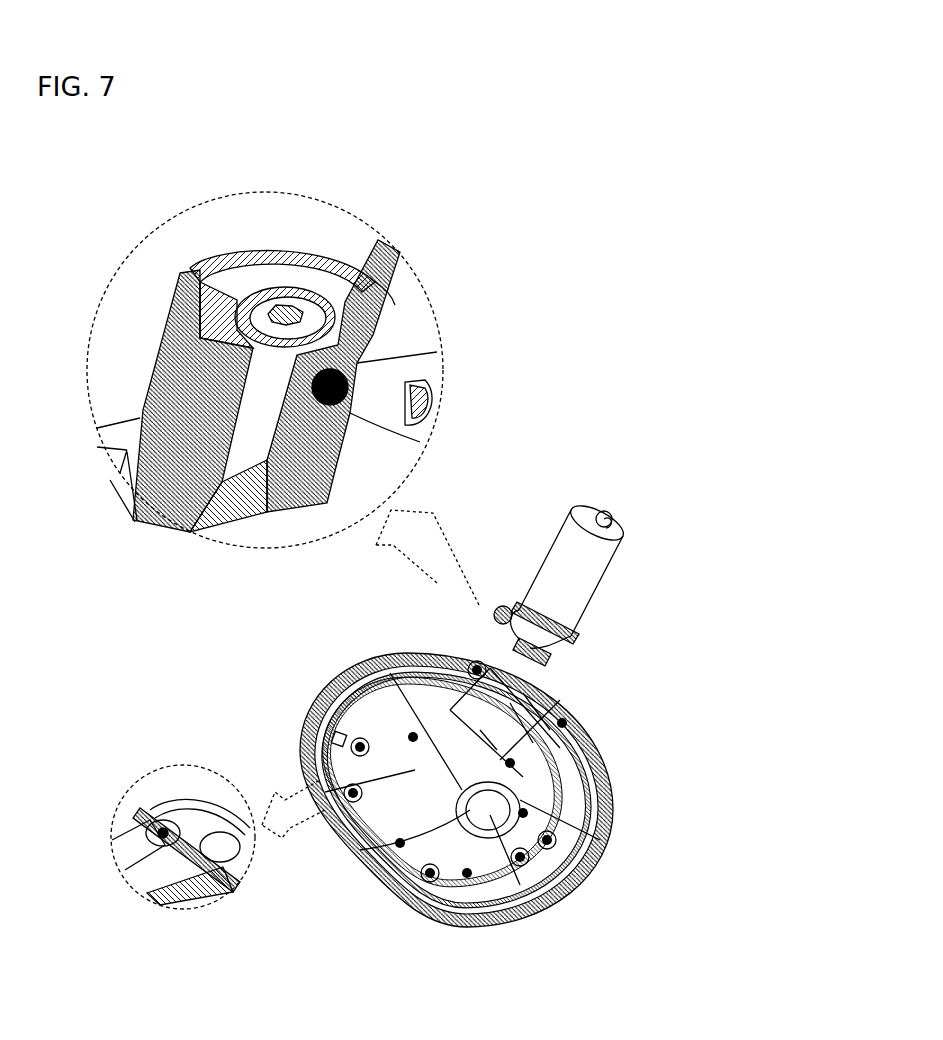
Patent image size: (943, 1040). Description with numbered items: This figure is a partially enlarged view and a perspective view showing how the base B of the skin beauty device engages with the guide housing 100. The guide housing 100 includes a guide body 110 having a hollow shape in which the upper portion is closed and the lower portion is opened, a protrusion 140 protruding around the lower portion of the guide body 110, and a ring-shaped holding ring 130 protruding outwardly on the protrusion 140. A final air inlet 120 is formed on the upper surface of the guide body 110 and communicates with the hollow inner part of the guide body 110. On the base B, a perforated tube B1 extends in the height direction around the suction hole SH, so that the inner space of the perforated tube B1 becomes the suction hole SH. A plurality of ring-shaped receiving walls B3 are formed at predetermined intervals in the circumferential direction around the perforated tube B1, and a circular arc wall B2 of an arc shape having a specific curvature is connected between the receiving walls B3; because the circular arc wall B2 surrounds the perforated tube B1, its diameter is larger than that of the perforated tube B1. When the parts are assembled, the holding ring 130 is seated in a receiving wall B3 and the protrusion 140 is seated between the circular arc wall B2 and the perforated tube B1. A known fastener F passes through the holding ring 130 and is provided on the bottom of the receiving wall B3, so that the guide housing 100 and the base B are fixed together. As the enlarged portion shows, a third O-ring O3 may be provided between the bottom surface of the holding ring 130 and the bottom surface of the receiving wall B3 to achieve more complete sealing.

The guide housing 100 is at (598, 528).
The guide body 110 is at (553, 538).
The final air inlet 120 is at (604, 510).
The holding ring 130 is at (239, 262).
The protrusion 140 is at (573, 636).
The third O-ring O3 is at (352, 378).
The base B is at (398, 822).
The perforated tube B1 is at (413, 288).
The circular arc wall B2 is at (392, 672).
The receiving wall B3 is at (153, 342).
The fastener F is at (314, 312).
The suction hole SH is at (523, 885).